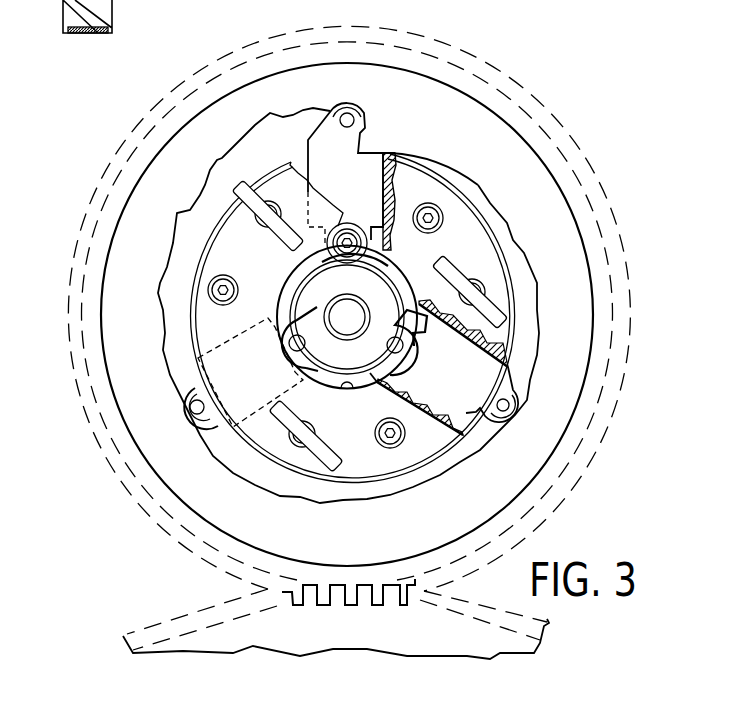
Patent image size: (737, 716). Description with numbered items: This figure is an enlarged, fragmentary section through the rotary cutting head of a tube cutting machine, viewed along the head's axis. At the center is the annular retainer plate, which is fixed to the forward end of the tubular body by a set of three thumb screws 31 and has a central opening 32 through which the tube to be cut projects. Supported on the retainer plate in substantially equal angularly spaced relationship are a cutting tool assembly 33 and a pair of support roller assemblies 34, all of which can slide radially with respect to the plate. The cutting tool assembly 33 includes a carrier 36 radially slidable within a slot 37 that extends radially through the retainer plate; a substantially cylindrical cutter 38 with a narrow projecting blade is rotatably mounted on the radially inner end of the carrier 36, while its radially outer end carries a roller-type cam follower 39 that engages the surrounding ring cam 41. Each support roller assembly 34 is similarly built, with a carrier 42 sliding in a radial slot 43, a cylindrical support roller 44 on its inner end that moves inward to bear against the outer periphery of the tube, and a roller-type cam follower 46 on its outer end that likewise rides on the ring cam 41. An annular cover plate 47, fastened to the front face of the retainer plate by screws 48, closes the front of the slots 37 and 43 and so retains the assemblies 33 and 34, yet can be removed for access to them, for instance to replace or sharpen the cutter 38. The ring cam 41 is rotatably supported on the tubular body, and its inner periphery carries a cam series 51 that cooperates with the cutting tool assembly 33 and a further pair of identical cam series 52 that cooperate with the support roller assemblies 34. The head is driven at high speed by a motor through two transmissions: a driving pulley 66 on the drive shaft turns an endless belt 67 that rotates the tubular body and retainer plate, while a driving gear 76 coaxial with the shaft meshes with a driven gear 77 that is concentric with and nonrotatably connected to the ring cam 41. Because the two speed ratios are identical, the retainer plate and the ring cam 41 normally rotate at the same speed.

The thumb screws 31 is at (462, 270).
The central opening 32 is at (348, 390).
The cutting tool assembly 33 is at (440, 203).
The support roller assemblies 34 is at (492, 340).
The carrier 36 is at (360, 167).
The slot 37 is at (392, 184).
The cutter 38 is at (325, 271).
The cam follower 39 is at (349, 100).
The ring cam 41 is at (137, 399).
The carrier 42 is at (462, 403).
The slot 43 is at (442, 403).
The support roller 44 is at (413, 333).
The cam follower 46 is at (516, 425).
The cover plate 47 is at (462, 225).
The screws 48 is at (441, 208).
The cam series 51 is at (273, 113).
The cam series 52 is at (548, 286).
The driving pulley 66 is at (65, 2).
The endless belt 67 is at (82, 33).
The driving gear 76 is at (177, 643).
The driven gear 77 is at (88, 285).